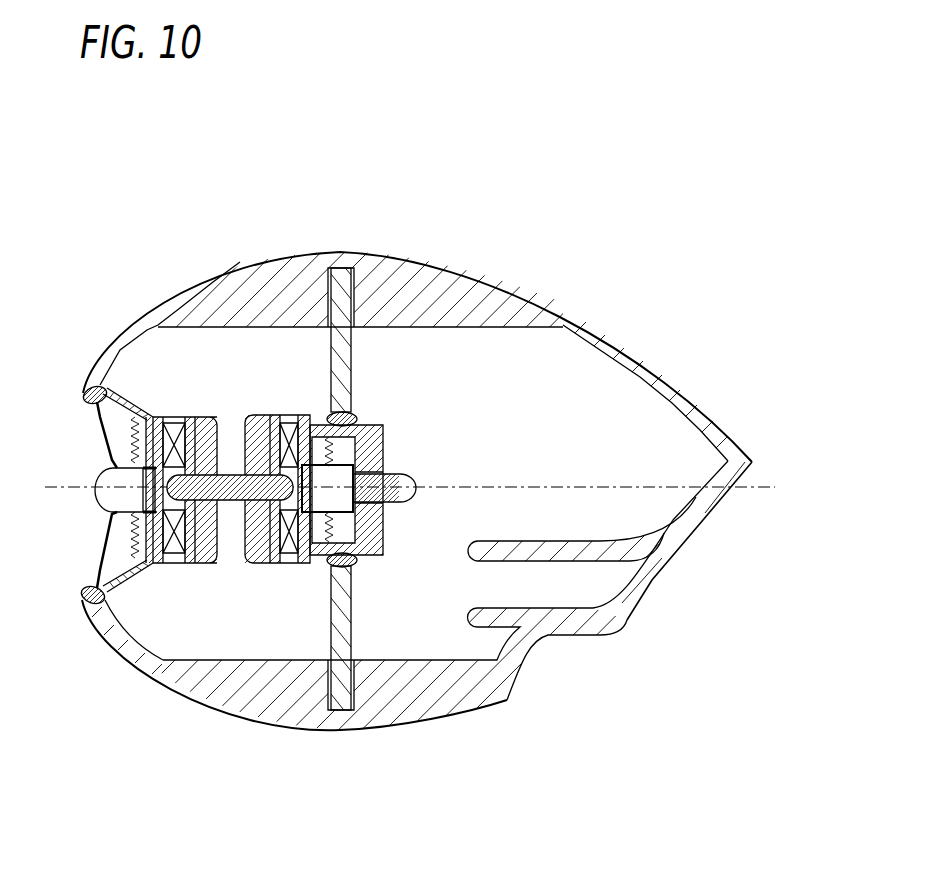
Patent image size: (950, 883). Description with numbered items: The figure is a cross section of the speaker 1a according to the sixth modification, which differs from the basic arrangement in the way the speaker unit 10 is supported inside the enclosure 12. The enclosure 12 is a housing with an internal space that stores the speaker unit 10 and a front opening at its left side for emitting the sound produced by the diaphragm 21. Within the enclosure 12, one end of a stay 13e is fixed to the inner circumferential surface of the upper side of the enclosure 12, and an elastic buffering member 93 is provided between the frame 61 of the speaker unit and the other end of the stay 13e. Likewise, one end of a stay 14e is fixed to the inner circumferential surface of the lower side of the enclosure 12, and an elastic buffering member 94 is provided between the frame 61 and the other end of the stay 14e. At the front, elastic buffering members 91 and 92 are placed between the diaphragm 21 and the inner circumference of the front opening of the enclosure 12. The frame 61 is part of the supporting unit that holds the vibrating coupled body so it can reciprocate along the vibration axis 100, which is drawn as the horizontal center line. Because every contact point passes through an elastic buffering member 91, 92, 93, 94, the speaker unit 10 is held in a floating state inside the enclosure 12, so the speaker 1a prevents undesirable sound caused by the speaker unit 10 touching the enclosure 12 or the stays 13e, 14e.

The speaker 1a is at (411, 184).
The speaker unit 10 is at (220, 398).
The enclosure 12 is at (527, 292).
The stay 13e is at (340, 268).
The stay 14e is at (343, 728).
The diaphragm 21 is at (95, 438).
The frame 61 is at (383, 428).
The elastic buffering member 91 is at (83, 398).
The elastic buffering member 92 is at (82, 591).
The elastic buffering member 93 is at (350, 417).
The elastic buffering member 94 is at (357, 562).
The vibration axis 100 is at (55, 474).